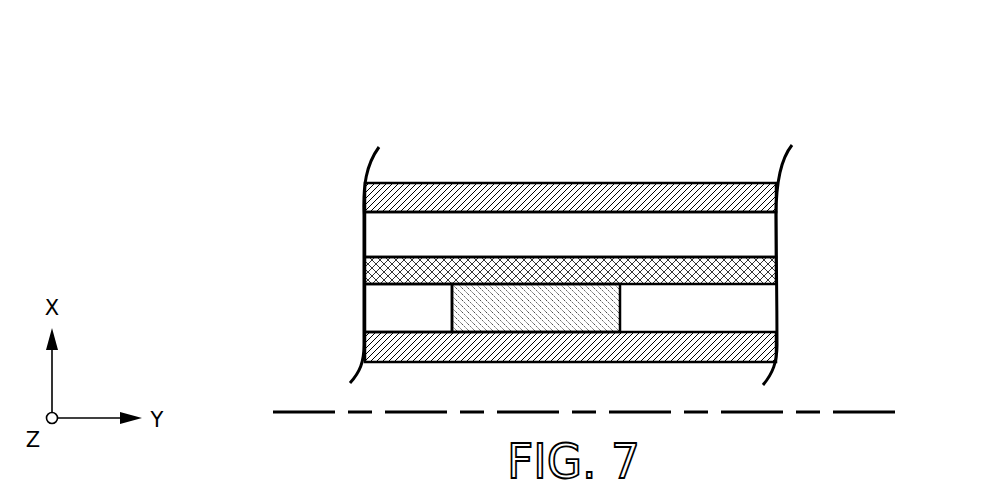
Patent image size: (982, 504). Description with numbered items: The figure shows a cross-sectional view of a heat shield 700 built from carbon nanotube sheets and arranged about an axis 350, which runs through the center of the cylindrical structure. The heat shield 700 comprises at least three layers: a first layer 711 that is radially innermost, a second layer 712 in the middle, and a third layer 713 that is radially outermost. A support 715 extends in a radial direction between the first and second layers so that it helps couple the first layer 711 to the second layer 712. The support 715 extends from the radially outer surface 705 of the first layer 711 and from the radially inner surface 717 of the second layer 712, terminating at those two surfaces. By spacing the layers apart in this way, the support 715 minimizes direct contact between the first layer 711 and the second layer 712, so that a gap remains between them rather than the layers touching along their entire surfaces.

The heat shield 700 is at (384, 102).
The third layer 713 is at (773, 195).
The radially inner surface 717 is at (420, 284).
The second layer 712 is at (768, 266).
The support 715 is at (540, 293).
The radially outer surface 705 is at (412, 331).
The first layer 711 is at (768, 340).
The axis 350 is at (435, 412).